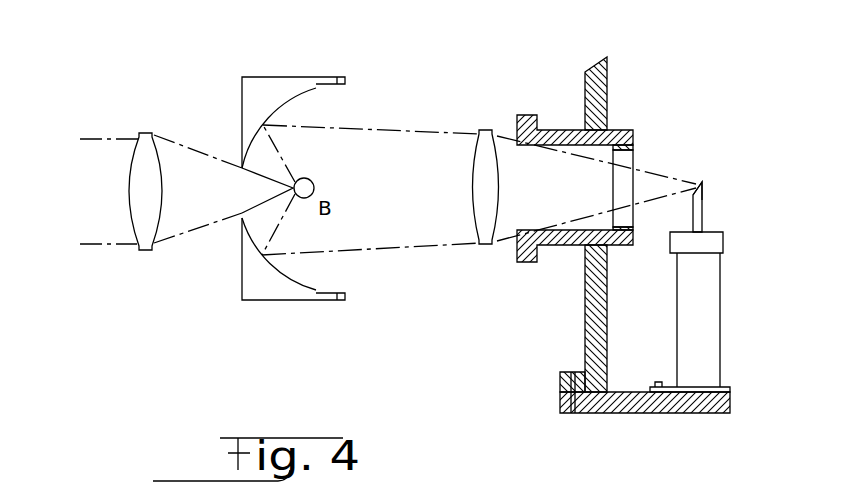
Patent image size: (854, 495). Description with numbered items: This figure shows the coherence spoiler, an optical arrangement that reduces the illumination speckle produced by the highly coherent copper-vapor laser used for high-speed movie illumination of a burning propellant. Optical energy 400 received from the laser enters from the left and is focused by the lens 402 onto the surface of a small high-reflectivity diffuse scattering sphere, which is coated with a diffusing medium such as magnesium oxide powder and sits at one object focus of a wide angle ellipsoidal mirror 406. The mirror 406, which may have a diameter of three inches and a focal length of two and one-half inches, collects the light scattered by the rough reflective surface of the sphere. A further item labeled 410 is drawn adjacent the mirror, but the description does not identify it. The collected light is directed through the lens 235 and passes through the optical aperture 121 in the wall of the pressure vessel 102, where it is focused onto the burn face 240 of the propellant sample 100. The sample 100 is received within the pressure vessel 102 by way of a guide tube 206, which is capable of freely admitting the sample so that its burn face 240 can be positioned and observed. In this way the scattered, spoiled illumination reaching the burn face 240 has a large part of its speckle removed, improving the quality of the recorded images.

The optical energy 400 is at (93, 139).
The lens 402 is at (147, 133).
The wide angle ellipsoidal mirror 406 is at (263, 77).
The ellipsoidal mirror E.M. 410 is at (318, 90).
The optical aperture 121 is at (528, 115).
The lens 235 is at (488, 130).
The burn face 240 is at (698, 183).
The propellant sample 100 is at (704, 212).
The pressure vessel 102 is at (587, 327).
The guide tube 206 is at (722, 318).